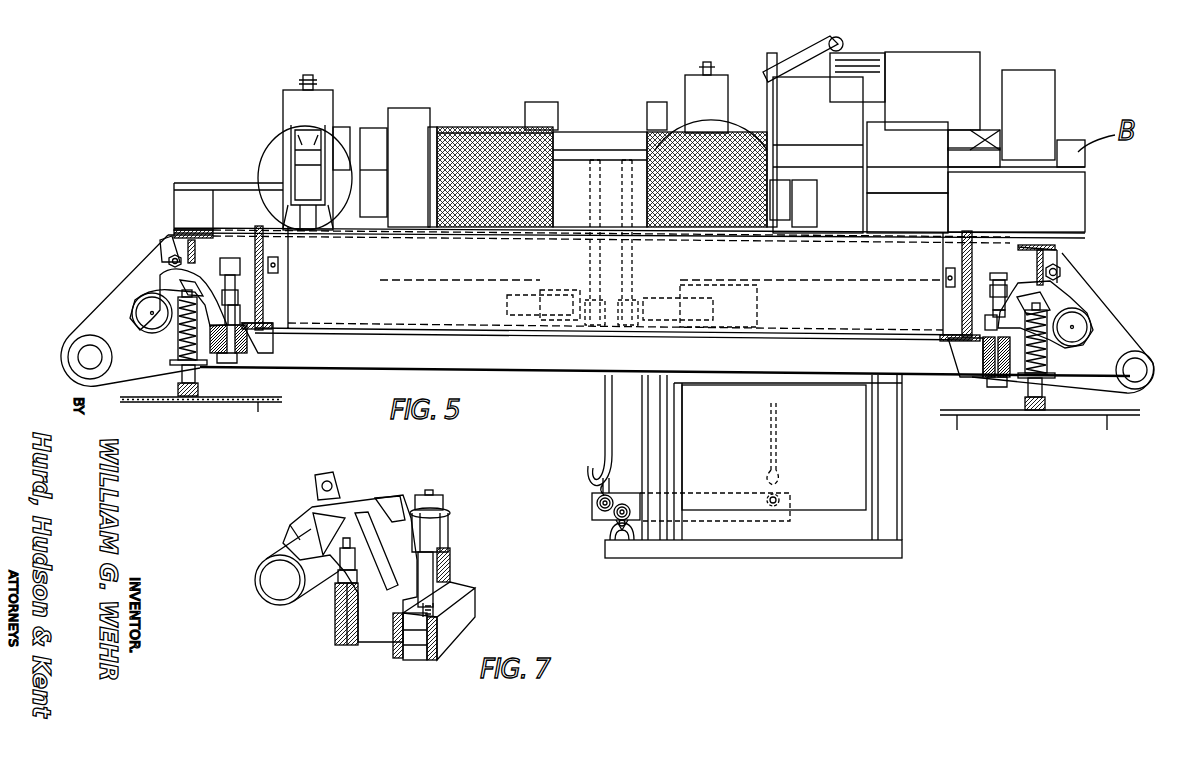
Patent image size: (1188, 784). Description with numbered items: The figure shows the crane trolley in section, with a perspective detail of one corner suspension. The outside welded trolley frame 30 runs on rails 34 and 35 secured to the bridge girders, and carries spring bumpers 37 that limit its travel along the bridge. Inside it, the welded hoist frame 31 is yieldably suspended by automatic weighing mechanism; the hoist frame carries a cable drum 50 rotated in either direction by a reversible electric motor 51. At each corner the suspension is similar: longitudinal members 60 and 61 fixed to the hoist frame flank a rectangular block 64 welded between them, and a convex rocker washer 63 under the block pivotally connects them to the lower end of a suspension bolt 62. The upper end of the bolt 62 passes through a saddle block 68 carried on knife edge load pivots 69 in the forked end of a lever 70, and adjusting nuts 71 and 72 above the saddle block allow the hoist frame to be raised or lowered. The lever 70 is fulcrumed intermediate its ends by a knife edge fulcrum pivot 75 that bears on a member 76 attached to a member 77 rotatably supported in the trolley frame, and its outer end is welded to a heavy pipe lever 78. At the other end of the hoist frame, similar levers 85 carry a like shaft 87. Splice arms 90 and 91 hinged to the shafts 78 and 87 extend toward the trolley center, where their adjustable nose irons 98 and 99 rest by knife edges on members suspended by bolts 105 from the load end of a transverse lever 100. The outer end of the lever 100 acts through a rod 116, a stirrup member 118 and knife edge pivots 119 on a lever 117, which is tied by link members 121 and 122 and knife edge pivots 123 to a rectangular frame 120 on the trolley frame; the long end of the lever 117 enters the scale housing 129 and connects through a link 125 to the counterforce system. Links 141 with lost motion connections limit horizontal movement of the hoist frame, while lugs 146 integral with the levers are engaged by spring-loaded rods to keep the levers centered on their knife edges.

In FIG. 5, the trolley frame 30 is at (147, 257).
In FIG. 7, the trolley frame 30 is at (338, 610).
In FIG. 5, the hoist frame 31 is at (184, 196).
In FIG. 5, the rail 34 is at (1045, 402).
In FIG. 5, the rail 35 is at (175, 384).
In FIG. 5, the spring bumper 37 is at (80, 374).
In FIG. 5, the cable drum 50 is at (590, 143).
In FIG. 5, the reversible electric motor 51 is at (800, 63).
In FIG. 7, the longitudinal member 60 is at (395, 637).
In FIG. 7, the longitudinal member 61 is at (447, 643).
In FIG. 5, the suspension bolt 62 is at (218, 365).
In FIG. 7, the suspension bolt 62 is at (440, 605).
In FIG. 7, the rocker washer 63 is at (413, 640).
In FIG. 7, the rectangular block 64 is at (474, 603).
In FIG. 5, the saddle block 68 is at (240, 283).
In FIG. 7, the saddle block 68 is at (448, 510).
In FIG. 5, the knife edge load pivot 69 is at (237, 322).
In FIG. 7, the knife edge load pivot 69 is at (450, 560).
In FIG. 5, the lever 70 is at (1080, 290).
In FIG. 7, the lever 70 is at (360, 495).
In FIG. 7, the adjusting nut 71 is at (427, 490).
In FIG. 7, the adjusting nut 72 is at (442, 508).
In FIG. 7, the knife edge fulcrum pivot 75 is at (340, 537).
In FIG. 7, the member 76 is at (338, 572).
In FIG. 7, the member 77 is at (340, 585).
In FIG. 5, the pipe lever 78 is at (1093, 320).
In FIG. 7, the pipe lever 78 is at (255, 578).
In FIG. 5, the lever 85 is at (170, 264).
In FIG. 5, the shaft 87 is at (135, 316).
In FIG. 5, the splice arm 90 is at (757, 291).
In FIG. 5, the splice arm 91 is at (505, 290).
In FIG. 5, the nose iron 98 is at (595, 300).
In FIG. 5, the nose iron 99 is at (630, 300).
In FIG. 5, the transverse lever 100 is at (608, 170).
In FIG. 5, the bolt 105 is at (628, 263).
In FIG. 5, the rod 116 is at (605, 432).
In FIG. 5, the lever 117 is at (592, 513).
In FIG. 5, the stirrup member 118 is at (596, 486).
In FIG. 5, the knife edge pivot 119 is at (597, 502).
In FIG. 5, the rectangular frame 120 is at (793, 553).
In FIG. 5, the link member 121 is at (637, 523).
In FIG. 5, the link member 122 is at (618, 534).
In FIG. 5, the knife edge pivot 123 is at (612, 525).
In FIG. 5, the link 125 is at (781, 440).
In FIG. 5, the housing 129 is at (813, 523).
In FIG. 5, the link 141 is at (280, 264).
In FIG. 5, the lug 146 is at (167, 242).
In FIG. 7, the lug 146 is at (340, 462).